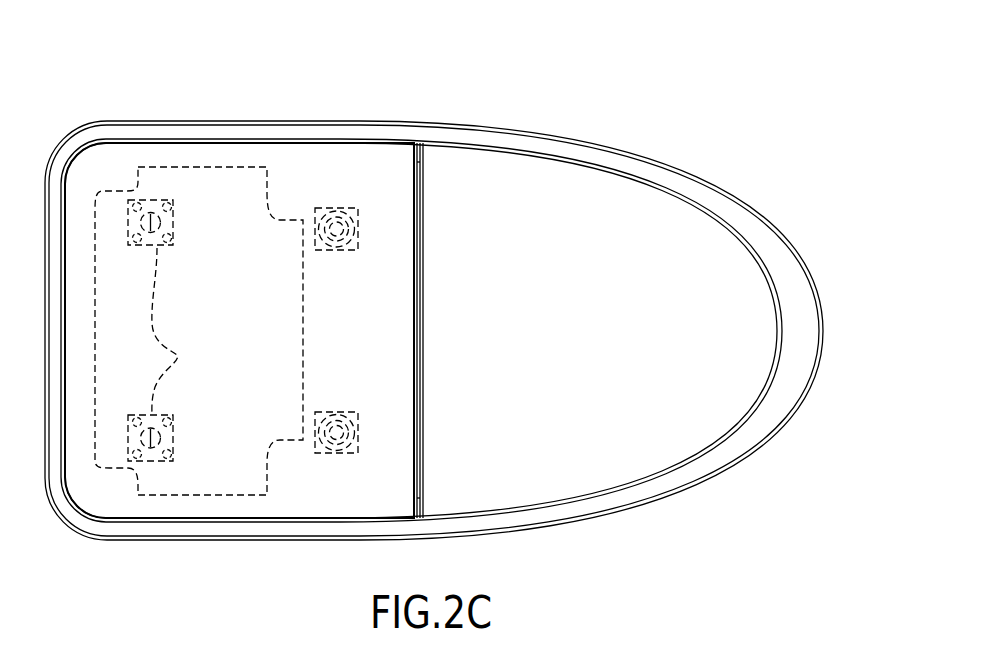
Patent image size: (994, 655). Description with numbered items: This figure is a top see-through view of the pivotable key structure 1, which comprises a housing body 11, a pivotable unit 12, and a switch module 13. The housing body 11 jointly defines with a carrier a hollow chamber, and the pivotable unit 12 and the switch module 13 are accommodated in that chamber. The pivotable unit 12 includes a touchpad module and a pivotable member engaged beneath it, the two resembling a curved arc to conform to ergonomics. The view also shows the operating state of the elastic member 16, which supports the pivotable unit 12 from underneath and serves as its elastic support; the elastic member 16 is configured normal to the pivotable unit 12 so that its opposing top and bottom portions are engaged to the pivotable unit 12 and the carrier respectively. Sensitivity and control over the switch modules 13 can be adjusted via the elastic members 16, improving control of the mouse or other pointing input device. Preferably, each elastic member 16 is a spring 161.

The pivotable key structure 1 is at (138, 32).
The housing body 11 is at (748, 226).
The pivotable unit 12 is at (345, 168).
The switch module 13 is at (173, 351).
The elastic member 16 is at (238, 262).
The spring 161 is at (333, 412).